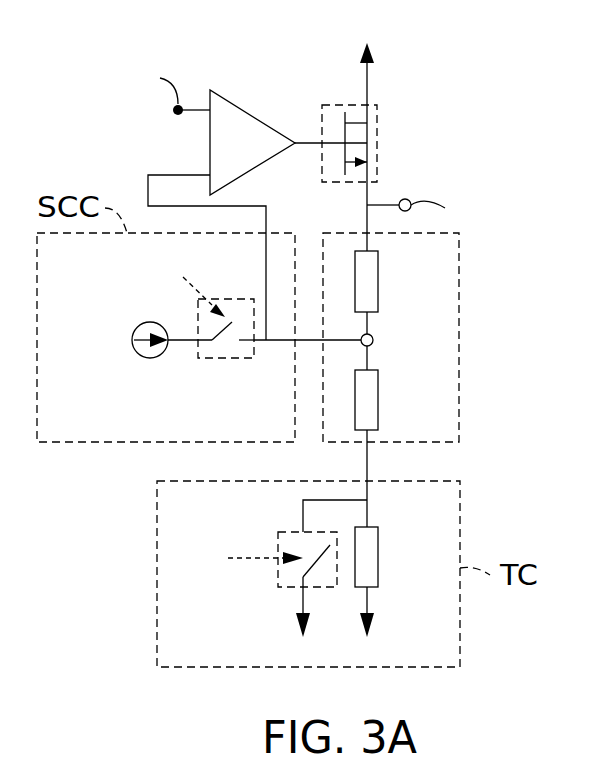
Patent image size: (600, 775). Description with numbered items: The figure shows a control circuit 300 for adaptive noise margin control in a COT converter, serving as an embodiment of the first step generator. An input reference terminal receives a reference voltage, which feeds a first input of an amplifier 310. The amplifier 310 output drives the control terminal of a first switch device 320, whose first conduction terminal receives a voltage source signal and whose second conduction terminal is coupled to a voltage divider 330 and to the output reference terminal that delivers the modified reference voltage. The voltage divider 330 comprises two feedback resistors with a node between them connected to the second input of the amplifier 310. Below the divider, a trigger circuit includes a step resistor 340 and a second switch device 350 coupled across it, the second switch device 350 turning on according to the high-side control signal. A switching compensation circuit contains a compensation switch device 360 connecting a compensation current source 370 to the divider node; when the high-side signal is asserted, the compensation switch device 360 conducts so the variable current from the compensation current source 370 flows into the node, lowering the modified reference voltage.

The control circuit 300 is at (108, 28).
The amplifier 310 is at (240, 108).
The first switch device 320 is at (377, 136).
The voltage divider 330 is at (459, 337).
The step resistor 340 is at (378, 575).
The second switch device 350 is at (275, 578).
The compensation switch device 360 is at (230, 360).
The compensation current source 370 is at (138, 326).